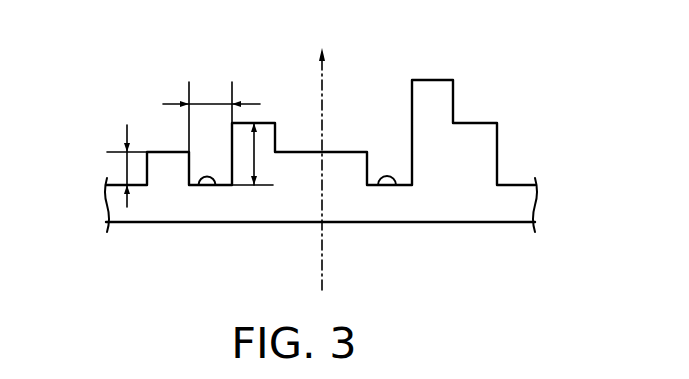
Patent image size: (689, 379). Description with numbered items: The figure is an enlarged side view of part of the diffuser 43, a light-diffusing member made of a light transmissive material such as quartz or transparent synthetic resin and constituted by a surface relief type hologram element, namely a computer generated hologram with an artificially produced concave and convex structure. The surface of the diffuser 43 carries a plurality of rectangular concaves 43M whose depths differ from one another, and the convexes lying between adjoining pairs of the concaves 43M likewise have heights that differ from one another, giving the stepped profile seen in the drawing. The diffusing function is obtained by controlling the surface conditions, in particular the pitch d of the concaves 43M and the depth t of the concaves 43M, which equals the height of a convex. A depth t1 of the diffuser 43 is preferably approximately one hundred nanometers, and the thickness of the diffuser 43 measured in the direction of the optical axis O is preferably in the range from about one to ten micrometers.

The diffuser 43 is at (516, 80).
The rectangular concaves 43M is at (217, 188).
The pitch of the concaves d is at (208, 100).
The depth of the concaves t is at (255, 155).
The depth of the diffuser t1 is at (127, 170).
The optical axis O is at (323, 100).